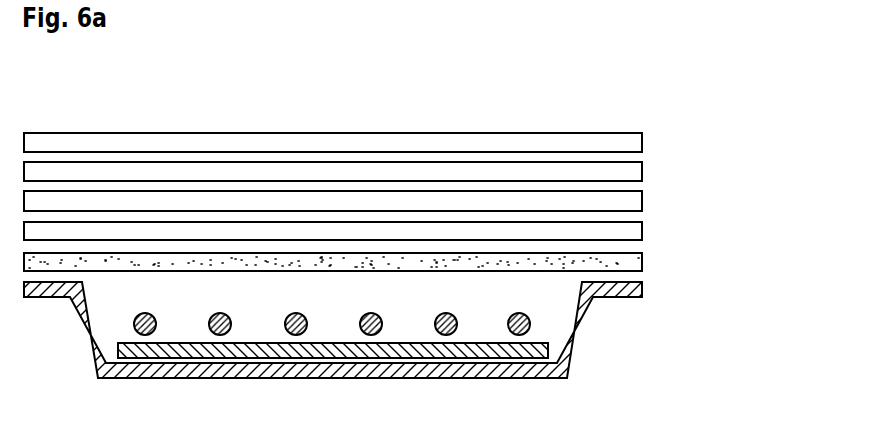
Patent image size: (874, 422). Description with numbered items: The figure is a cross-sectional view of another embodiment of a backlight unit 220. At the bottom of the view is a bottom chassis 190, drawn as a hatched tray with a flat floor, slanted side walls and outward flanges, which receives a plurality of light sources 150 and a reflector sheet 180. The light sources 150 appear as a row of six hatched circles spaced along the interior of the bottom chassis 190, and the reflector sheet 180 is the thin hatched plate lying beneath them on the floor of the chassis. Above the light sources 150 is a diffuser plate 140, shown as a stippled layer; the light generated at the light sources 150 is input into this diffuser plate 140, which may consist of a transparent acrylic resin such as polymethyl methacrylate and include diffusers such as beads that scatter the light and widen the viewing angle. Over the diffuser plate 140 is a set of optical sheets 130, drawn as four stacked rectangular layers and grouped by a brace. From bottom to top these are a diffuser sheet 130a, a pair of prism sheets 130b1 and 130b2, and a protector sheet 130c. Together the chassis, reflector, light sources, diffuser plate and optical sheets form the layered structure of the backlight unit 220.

The backlight unit 220 is at (400, 86).
The set of optical sheets 130 is at (447, 179).
The diffuser sheet 130a is at (643, 229).
The prism sheet 130b1 is at (643, 199).
The prism sheet 130b2 is at (643, 167).
The protector sheet 130c is at (643, 136).
The diffuser plate 140 is at (643, 257).
The light sources 150 is at (530, 321).
The reflector sheet 180 is at (540, 359).
The bottom chassis 190 is at (587, 308).